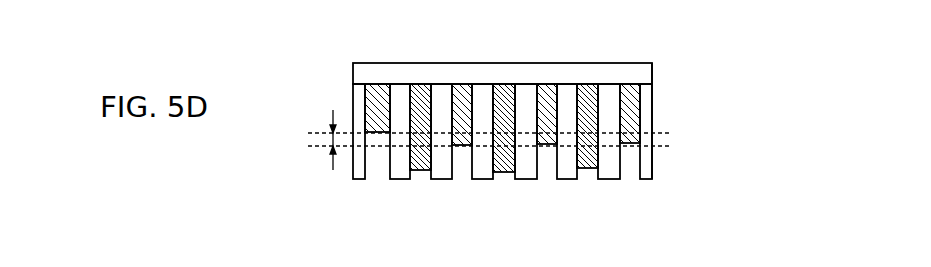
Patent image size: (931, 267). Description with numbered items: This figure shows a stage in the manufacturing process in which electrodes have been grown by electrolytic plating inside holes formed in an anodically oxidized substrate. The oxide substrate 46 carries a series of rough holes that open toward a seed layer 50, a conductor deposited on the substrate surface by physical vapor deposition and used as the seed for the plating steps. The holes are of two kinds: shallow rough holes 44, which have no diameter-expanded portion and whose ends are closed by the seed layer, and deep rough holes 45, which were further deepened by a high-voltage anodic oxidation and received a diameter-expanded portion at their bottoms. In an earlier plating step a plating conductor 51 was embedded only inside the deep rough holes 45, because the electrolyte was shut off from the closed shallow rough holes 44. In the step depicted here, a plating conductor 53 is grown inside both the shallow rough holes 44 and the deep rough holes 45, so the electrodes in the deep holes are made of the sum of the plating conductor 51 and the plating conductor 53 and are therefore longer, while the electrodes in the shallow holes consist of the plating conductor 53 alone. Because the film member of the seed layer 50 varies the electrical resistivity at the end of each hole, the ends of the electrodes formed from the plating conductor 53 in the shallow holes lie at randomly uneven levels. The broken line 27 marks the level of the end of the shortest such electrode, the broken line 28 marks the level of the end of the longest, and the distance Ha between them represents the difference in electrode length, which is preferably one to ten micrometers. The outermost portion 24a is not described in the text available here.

The seed layer 50 is at (653, 75).
The oxide substrate 46 is at (653, 162).
The end wall 24a is at (370, 181).
The plating conductor 53 is at (386, 183).
The shallow rough hole 44 is at (376, 85).
The deep rough hole 45 is at (407, 108).
The plating conductor 51 is at (427, 85).
The broken line 27 is at (323, 132).
The broken line 28 is at (323, 147).
The distance Ha is at (328, 142).